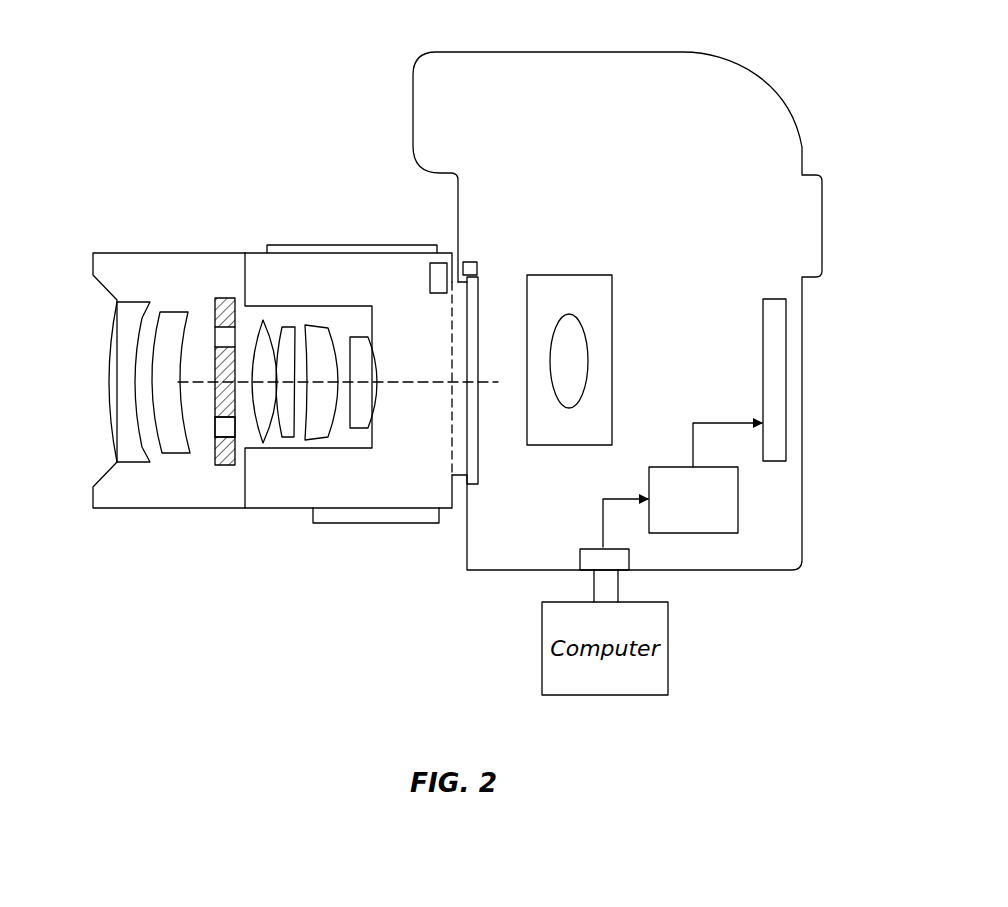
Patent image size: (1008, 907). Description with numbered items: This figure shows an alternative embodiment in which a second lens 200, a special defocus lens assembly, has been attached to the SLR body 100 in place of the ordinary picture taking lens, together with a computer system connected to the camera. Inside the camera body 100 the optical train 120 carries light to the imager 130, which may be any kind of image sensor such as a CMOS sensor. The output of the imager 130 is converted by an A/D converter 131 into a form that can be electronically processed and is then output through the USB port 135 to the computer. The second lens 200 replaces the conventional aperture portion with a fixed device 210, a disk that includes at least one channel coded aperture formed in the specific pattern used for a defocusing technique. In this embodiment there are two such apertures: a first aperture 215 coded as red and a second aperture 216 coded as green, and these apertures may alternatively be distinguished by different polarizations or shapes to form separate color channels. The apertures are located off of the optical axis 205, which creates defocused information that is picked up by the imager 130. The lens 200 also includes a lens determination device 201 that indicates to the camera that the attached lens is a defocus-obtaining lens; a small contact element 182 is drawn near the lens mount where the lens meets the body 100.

The SLR body 100 is at (692, 52).
The optical train 120 is at (597, 277).
The imager 130 is at (787, 332).
The A/D converter 131 is at (738, 497).
The USB port 135 is at (588, 549).
The lens mount contact 182 is at (472, 262).
The second lens 200 is at (112, 253).
The lens determination device 201 is at (430, 284).
The optical axis 205 is at (408, 380).
The fixed device 210 is at (224, 464).
The first aperture 215 is at (215, 337).
The second aperture 216 is at (215, 430).